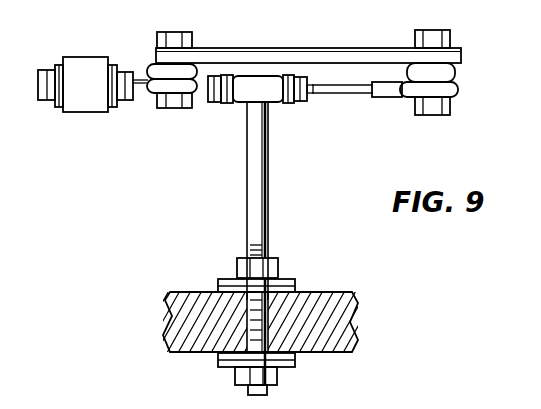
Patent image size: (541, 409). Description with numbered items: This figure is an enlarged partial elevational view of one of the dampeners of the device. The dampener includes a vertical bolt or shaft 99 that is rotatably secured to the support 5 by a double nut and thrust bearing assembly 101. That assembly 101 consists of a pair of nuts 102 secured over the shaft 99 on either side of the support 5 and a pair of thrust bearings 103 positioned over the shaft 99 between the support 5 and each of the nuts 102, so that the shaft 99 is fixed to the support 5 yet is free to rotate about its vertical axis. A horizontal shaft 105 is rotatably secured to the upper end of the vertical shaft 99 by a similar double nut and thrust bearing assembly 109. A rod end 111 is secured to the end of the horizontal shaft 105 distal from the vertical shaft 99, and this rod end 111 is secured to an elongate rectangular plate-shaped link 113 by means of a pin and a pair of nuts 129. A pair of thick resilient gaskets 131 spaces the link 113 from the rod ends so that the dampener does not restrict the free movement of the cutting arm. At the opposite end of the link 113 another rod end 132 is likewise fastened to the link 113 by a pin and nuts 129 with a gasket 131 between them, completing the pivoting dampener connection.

The support 5 is at (358, 320).
The vertical bolt or shaft 99 is at (268, 182).
The double nut and thrust bearing assembly 101 is at (283, 259).
The nuts 102 is at (237, 268).
The thrust bearings 103 is at (295, 285).
The horizontal shaft 105 is at (345, 95).
The double nut and thrust bearing assembly 109 is at (220, 103).
The rod end 111 is at (458, 88).
The link 113 is at (298, 47).
The nuts 129 is at (191, 32).
The resilient gaskets 131 is at (147, 70).
The turnbuckle 132 is at (48, 112).